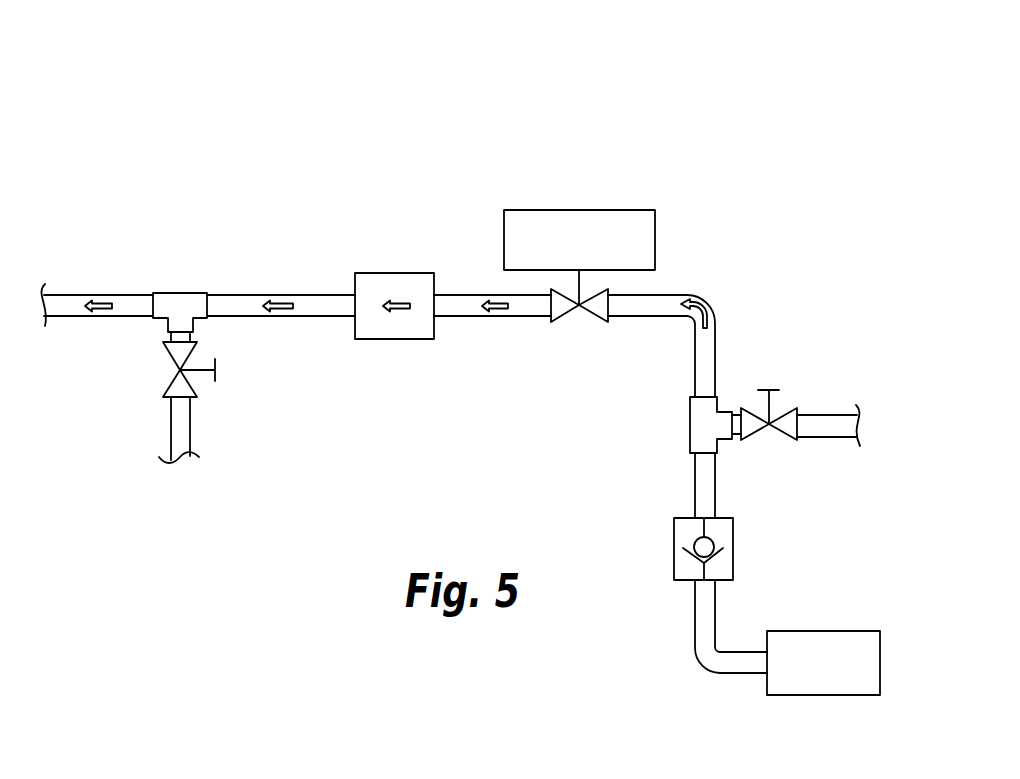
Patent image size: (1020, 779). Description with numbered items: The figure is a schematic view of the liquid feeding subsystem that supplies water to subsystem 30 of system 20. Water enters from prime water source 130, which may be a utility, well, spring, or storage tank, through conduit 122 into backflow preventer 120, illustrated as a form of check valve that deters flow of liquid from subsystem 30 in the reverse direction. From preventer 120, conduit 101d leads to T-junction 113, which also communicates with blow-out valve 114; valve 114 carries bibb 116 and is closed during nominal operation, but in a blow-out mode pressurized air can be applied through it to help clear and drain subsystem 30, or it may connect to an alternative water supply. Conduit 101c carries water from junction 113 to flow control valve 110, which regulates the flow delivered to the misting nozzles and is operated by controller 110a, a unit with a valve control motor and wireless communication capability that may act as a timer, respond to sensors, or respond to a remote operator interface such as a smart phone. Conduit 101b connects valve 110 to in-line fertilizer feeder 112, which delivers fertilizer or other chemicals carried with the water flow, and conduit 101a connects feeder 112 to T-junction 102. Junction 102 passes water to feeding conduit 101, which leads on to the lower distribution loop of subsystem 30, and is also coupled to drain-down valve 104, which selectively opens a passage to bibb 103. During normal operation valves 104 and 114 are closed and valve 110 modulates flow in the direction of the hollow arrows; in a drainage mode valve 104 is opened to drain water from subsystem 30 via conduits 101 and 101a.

The system 20 is at (648, 98).
The subsystem 30 is at (380, 197).
The feeding conduit 101 is at (92, 295).
The conduit 101a is at (262, 319).
The conduit 101b is at (472, 317).
The conduit 101c is at (716, 333).
The conduit 101d is at (716, 477).
The T-junction 102 is at (193, 293).
The bibb 103 is at (189, 415).
The drain-down valve 104 is at (174, 368).
The flow control valve 110 is at (568, 322).
The controller 110a is at (546, 210).
The in-line fertilizer feeder 112 is at (391, 273).
The T-junction 113 is at (690, 415).
The blow-out valve 114 is at (771, 418).
The bibb 116 is at (845, 415).
The backflow preventer 120 is at (674, 540).
The conduit 122 is at (716, 598).
The prime water source 130 is at (834, 631).